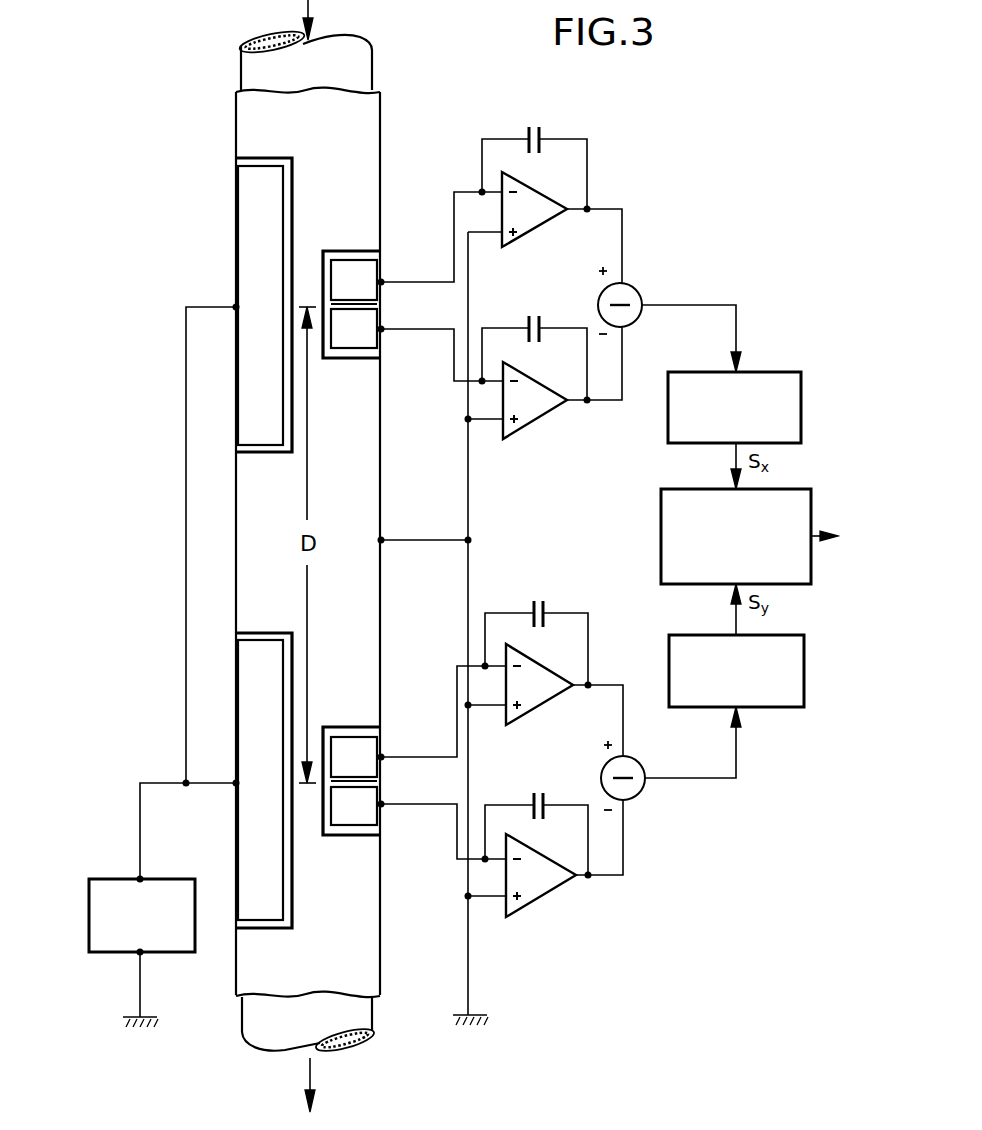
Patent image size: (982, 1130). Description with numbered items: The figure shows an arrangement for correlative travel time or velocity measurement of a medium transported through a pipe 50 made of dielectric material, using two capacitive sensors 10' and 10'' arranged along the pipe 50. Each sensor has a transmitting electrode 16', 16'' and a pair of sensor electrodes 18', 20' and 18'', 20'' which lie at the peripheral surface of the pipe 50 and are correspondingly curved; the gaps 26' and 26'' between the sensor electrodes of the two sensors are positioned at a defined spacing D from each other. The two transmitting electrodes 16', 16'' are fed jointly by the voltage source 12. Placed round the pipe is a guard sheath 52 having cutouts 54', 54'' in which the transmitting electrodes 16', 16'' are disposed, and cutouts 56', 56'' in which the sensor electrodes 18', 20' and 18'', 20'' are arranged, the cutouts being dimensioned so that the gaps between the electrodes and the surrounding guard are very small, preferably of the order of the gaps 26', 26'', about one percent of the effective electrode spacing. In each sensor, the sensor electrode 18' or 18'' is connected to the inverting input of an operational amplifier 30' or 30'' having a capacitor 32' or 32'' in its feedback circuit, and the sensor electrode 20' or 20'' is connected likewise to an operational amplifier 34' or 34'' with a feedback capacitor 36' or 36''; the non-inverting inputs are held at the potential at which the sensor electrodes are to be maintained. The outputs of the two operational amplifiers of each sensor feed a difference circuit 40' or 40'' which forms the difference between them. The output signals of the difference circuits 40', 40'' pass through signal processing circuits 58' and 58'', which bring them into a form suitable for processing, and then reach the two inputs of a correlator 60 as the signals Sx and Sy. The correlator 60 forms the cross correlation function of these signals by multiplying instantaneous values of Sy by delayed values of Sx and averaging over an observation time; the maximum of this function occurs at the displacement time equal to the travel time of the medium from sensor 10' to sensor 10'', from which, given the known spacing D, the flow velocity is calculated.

The capacitive sensor 10' is at (252, 289).
The capacitive sensor 10'' is at (242, 786).
The voltage source 12 is at (111, 895).
The transmitting electrode 16' is at (235, 305).
The transmitting electrode 16'' is at (239, 780).
The sensor electrode 18' is at (381, 271).
The sensor electrode 18'' is at (382, 738).
The sensor electrode 20' is at (384, 340).
The sensor electrode 20'' is at (387, 819).
The gap 26' is at (386, 307).
The gap 26'' is at (387, 775).
The operational amplifier 30' is at (549, 209).
The operational amplifier 30'' is at (539, 695).
The capacitor 32' is at (531, 155).
The capacitor 32'' is at (536, 631).
The operational amplifier 34' is at (544, 404).
The operational amplifier 34'' is at (541, 886).
The capacitor 36' is at (534, 348).
The capacitor 36'' is at (536, 818).
The difference circuit 40' is at (632, 288).
The difference circuit 40'' is at (648, 779).
The pipe 50 is at (363, 62).
The guard sheath 52 is at (249, 136).
The cutout 54' is at (290, 289).
The cutout 54'' is at (295, 786).
The cutout 56' is at (381, 288).
The cutout 56'' is at (383, 790).
The signal processing circuit 58' is at (734, 382).
The signal processing circuit 58'' is at (736, 693).
The correlator 60 is at (668, 512).